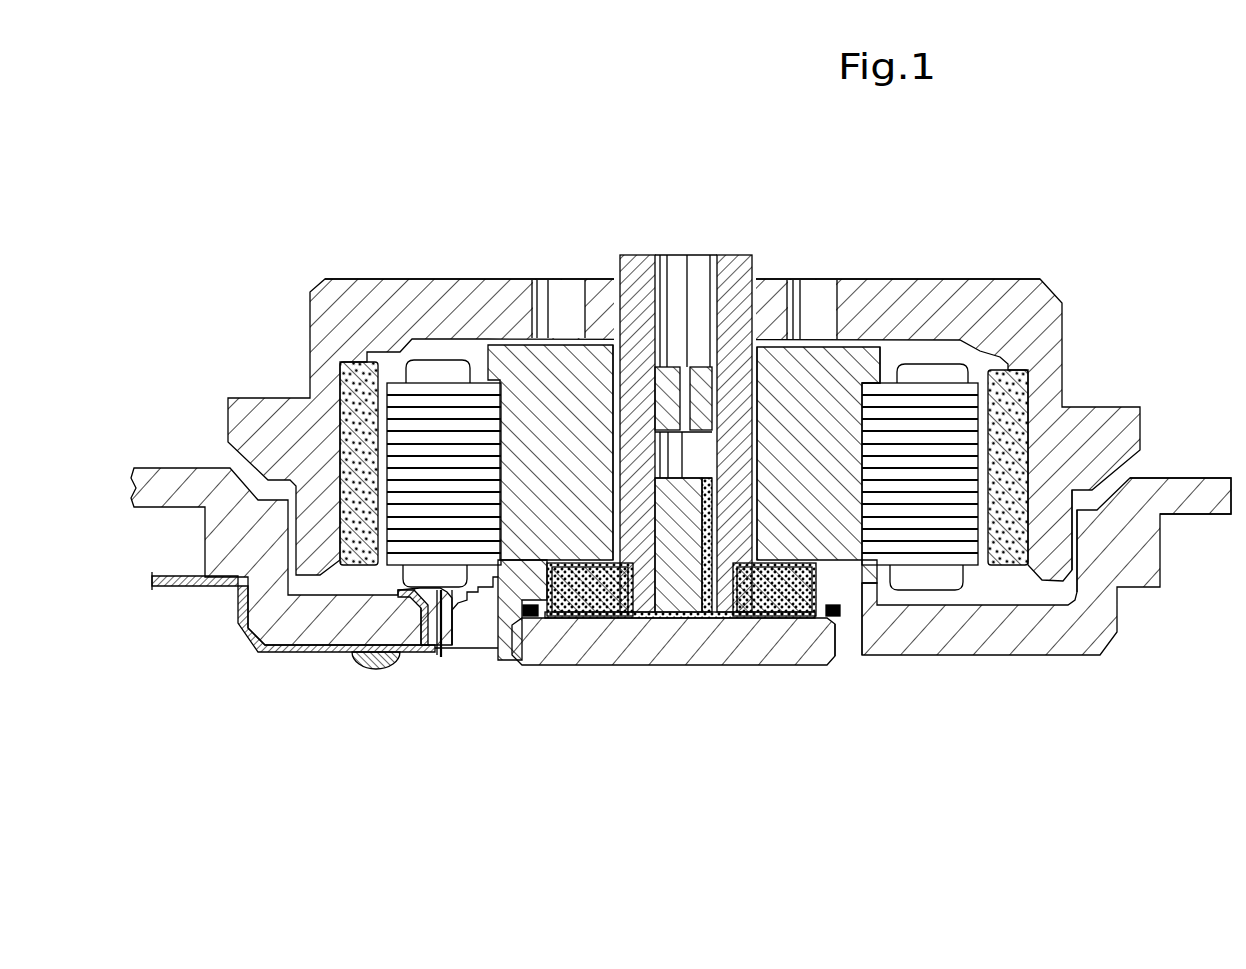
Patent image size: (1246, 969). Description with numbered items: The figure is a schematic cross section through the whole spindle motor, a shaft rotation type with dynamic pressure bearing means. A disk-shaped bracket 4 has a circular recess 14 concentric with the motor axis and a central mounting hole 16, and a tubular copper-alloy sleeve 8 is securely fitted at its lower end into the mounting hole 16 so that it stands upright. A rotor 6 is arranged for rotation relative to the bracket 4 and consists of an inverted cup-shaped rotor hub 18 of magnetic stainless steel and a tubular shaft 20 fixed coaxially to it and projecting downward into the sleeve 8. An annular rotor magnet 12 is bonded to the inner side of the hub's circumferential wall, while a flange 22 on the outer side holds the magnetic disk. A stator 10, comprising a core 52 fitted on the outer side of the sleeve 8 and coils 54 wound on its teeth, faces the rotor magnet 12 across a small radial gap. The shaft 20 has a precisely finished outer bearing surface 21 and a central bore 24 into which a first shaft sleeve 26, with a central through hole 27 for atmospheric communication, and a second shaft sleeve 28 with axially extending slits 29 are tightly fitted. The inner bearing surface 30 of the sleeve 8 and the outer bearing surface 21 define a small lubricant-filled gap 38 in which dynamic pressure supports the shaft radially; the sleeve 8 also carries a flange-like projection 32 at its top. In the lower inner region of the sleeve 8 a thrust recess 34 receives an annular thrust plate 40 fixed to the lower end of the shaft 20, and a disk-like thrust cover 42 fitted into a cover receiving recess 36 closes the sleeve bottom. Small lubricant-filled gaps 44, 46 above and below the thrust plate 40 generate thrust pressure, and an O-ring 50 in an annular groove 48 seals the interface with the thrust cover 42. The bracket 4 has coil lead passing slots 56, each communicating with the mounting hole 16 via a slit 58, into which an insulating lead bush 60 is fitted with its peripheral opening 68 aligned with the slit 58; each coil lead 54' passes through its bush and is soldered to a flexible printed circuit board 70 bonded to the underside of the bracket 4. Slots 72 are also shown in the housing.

The bracket 4 is at (1118, 622).
The rotor 6 is at (936, 278).
The tubular sleeve 8 is at (851, 347).
The stator 10 is at (969, 586).
The rotor magnet 12 is at (310, 372).
The circular recess 14 is at (1072, 602).
The mounting hole 16 is at (872, 664).
The rotor hub 18 is at (388, 278).
The tubular shaft 20 is at (640, 253).
The bearing surface 21 is at (545, 385).
The flange 22 is at (1142, 433).
The central bore 24 is at (667, 255).
The first shaft sleeve 26 is at (705, 300).
The through hole 27 is at (689, 300).
The second shaft sleeve 28 is at (672, 602).
The slits 29 is at (707, 602).
The bearing surface 30 is at (754, 330).
The flange-like projection 32 is at (881, 358).
The thrust recess 34 is at (808, 595).
The cover receiving recess 36 is at (838, 664).
The gap 38 is at (611, 362).
The thrust plate 40 is at (565, 605).
The thrust cover 42 is at (623, 652).
The gap 44 is at (765, 562).
The gap 46 is at (566, 592).
The annular groove 48 is at (515, 623).
The O-ring 50 is at (836, 638).
The core 52 is at (990, 370).
The coils 54 is at (699, 413).
The coil lead 54' is at (402, 707).
The coil lead passing slots 56 is at (426, 647).
The slit 58 is at (476, 637).
The lead bush 60 is at (418, 598).
The opening 68 is at (447, 652).
The flexible printed circuit board 70 is at (246, 640).
The screw holes 72 is at (557, 288).